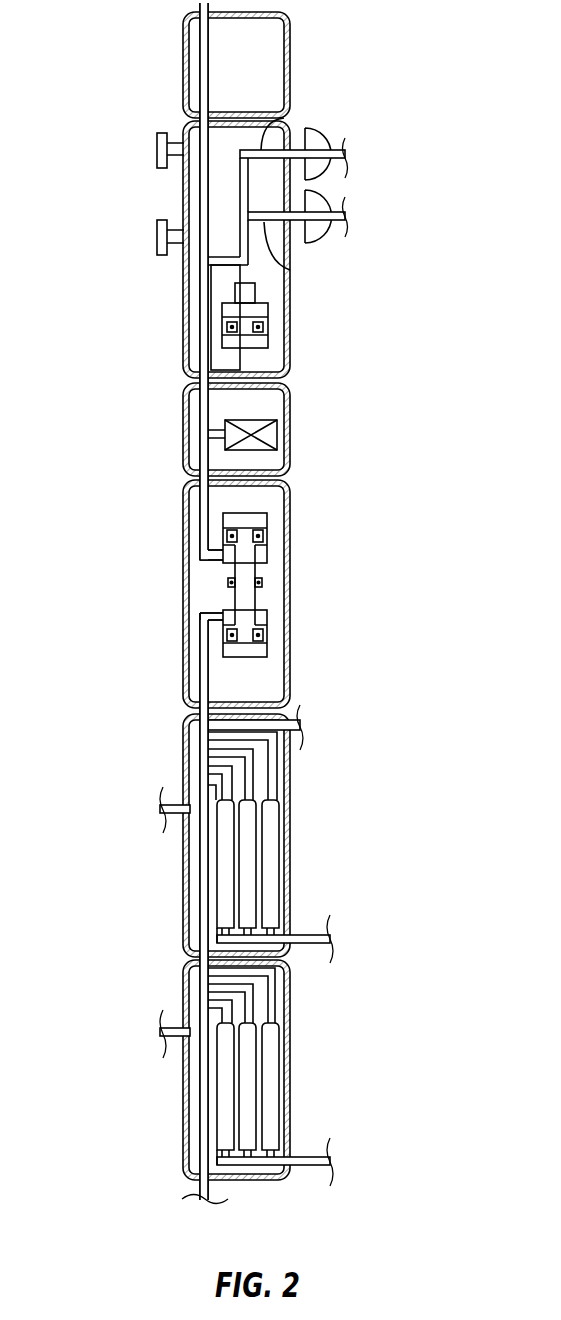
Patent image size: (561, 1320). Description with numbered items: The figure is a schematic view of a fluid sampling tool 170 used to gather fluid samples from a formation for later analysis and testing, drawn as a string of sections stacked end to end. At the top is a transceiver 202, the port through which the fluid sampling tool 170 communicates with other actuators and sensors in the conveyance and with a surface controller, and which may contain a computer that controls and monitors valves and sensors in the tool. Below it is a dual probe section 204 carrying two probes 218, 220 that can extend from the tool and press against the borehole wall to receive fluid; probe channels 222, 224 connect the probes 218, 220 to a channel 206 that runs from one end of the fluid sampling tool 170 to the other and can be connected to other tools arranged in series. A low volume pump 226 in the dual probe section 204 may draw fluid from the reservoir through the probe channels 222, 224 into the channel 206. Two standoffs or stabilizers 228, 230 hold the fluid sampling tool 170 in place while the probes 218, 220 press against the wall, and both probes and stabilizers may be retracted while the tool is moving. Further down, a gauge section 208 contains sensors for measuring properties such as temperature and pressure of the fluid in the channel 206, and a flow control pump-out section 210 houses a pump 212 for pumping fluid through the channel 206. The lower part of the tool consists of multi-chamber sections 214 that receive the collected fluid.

The fluid sampling tool 170 is at (368, 89).
The transceiver 202 is at (186, 70).
The dual probe section 204 is at (185, 305).
The channel 206 is at (199, 347).
The gauge section 208 is at (185, 433).
The flow control pump-out section 210 is at (184, 672).
The pump 212 is at (228, 583).
The multi-chamber section 214 is at (290, 780).
The probe 218 is at (326, 148).
The probe 220 is at (326, 226).
The probe channel 222 is at (286, 118).
The probe channel 224 is at (290, 266).
The low volume pump 226 is at (268, 332).
The standoff or stabilizer 228 is at (157, 148).
The standoff or stabilizer 230 is at (157, 237).